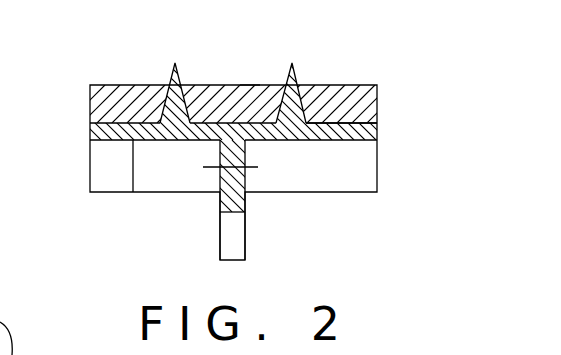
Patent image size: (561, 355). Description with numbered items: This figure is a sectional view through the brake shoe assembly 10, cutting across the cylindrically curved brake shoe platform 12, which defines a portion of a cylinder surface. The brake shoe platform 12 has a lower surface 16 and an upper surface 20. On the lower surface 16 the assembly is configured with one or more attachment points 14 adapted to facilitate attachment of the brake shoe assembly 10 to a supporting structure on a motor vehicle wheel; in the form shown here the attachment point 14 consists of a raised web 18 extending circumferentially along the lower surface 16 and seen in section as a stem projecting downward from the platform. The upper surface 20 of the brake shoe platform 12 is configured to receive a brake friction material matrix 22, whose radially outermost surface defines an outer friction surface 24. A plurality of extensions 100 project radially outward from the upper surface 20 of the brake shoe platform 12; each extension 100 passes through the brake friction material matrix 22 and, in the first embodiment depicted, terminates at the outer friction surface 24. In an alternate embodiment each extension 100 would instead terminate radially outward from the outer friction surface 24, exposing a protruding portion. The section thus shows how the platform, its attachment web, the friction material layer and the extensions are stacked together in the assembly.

The brake shoe assembly 10 is at (78, 152).
The brake shoe platform 12 is at (377, 133).
The attachment point 14 is at (245, 207).
The lower surface 16 is at (133, 192).
The raised web 18 is at (220, 202).
The upper surface 20 is at (132, 120).
The brake friction material matrix 22 is at (345, 107).
The outer friction surface 24 is at (250, 84).
The extension 100 is at (213, 84).